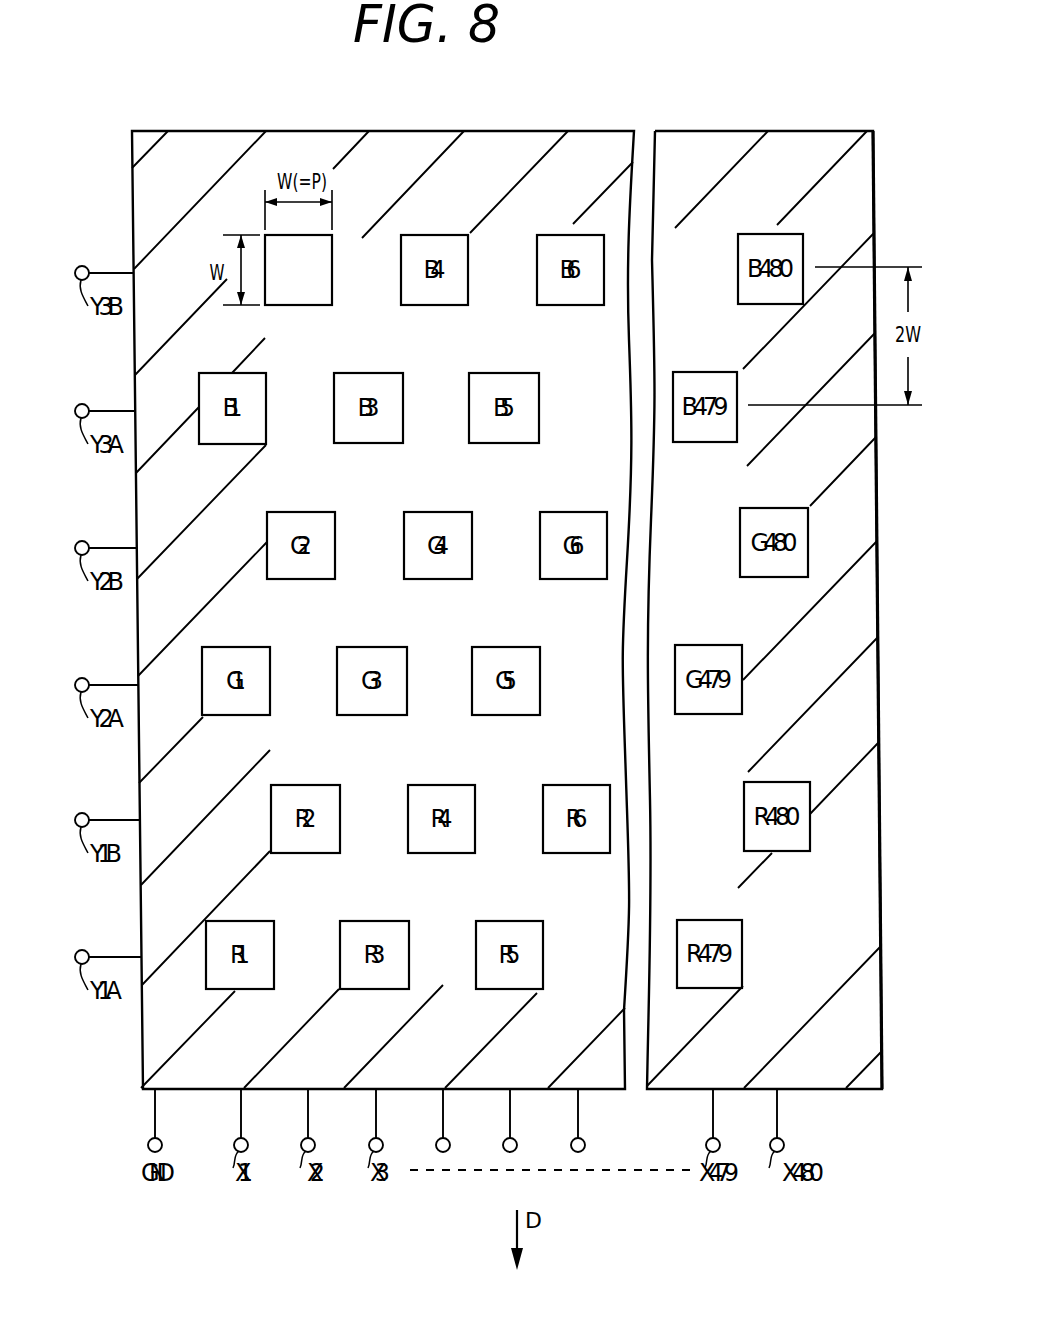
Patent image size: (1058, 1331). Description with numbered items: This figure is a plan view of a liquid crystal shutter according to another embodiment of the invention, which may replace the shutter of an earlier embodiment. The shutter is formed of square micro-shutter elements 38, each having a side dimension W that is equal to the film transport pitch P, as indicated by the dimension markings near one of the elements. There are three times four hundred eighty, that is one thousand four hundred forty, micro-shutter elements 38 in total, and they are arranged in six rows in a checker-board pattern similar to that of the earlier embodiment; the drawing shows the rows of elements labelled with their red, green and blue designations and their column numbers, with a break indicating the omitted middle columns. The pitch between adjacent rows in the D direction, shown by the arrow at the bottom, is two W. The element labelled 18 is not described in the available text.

The substrate 18 is at (208, 146).
The micro-shutter element 38 is at (333, 272).